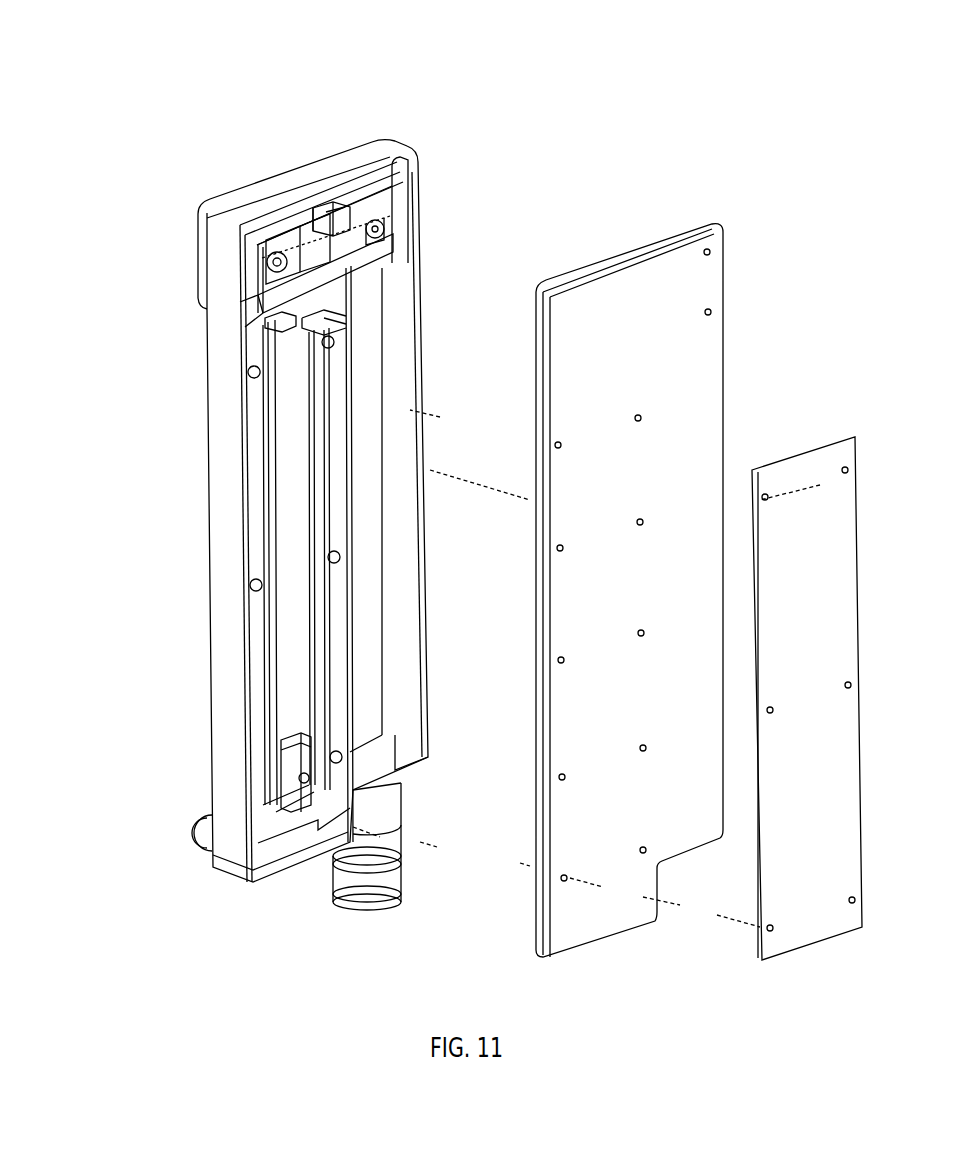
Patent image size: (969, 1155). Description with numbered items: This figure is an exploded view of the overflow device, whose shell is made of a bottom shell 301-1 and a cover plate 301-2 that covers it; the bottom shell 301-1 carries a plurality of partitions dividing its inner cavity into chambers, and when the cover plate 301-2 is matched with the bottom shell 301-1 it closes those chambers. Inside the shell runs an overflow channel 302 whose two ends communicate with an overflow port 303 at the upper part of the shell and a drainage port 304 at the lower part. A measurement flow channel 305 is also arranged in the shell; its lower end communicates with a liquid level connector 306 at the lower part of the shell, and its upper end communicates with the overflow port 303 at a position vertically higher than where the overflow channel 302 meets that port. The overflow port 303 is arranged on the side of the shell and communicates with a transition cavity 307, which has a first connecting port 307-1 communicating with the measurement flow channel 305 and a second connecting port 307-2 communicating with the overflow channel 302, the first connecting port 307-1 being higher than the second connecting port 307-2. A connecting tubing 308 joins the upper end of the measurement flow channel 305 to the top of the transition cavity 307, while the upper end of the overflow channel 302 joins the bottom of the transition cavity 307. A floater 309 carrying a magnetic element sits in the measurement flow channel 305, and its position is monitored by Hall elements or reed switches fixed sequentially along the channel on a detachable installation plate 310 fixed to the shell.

The bottom shell 301-1 is at (220, 542).
The cover plate 301-2 is at (640, 333).
The overflow channel 302 is at (365, 400).
The overflow port 303 is at (196, 245).
The drainage port 304 is at (367, 884).
The measurement flow channel 305 is at (297, 637).
The liquid level connector 306 is at (192, 840).
The transition cavity 307 is at (290, 268).
The first connecting port 307-1 is at (327, 197).
The second connecting port 307-2 is at (379, 252).
The connecting tubing 308 is at (243, 320).
The floater 309 is at (292, 763).
The installation plate 310 is at (805, 500).